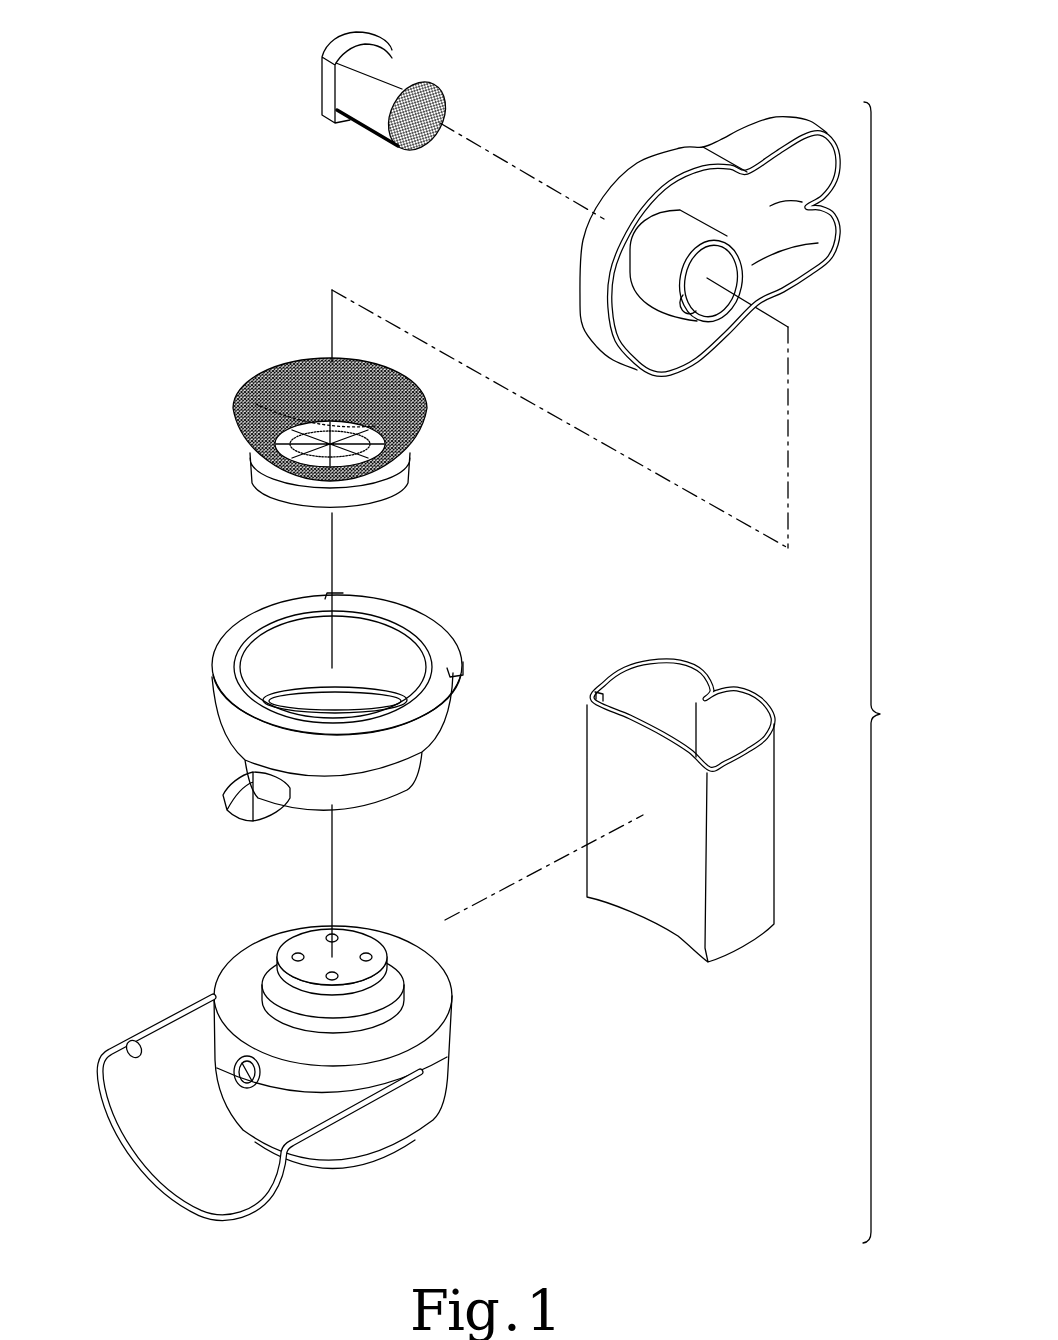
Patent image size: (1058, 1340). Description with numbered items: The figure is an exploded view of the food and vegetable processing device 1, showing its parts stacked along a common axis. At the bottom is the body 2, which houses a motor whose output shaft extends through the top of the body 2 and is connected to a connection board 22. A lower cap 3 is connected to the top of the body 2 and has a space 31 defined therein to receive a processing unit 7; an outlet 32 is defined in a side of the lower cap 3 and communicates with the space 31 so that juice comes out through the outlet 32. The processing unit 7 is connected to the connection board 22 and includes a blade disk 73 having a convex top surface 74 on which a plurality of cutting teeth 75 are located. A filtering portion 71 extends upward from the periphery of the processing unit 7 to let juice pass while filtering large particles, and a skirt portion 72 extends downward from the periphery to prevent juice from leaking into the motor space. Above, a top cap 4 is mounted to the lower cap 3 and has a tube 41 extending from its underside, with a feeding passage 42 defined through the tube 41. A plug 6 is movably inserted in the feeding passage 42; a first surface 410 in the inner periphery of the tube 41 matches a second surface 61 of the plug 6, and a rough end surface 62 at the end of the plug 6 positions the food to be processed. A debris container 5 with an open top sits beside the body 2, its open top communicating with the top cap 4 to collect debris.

The food and vegetable processing device 1 is at (885, 672).
The body 2 is at (312, 1067).
The connection board 22 is at (382, 953).
The lower cap 3 is at (304, 691).
The space 31 is at (380, 657).
The outlet 32 is at (243, 802).
The top cap 4 is at (664, 225).
The tube 41 is at (619, 330).
The first surface 410 is at (700, 302).
The feeding passage 42 is at (707, 280).
The debris container 5 is at (740, 930).
The plug 6 is at (371, 136).
The second surface 61 is at (337, 98).
The rough end surface 62 is at (427, 148).
The processing unit 7 is at (332, 402).
The filtering portion 71 is at (232, 418).
The skirt portion 72 is at (265, 487).
The blade disk 73 is at (423, 434).
The convex top surface 74 is at (314, 363).
The cutting teeth 75 is at (256, 404).